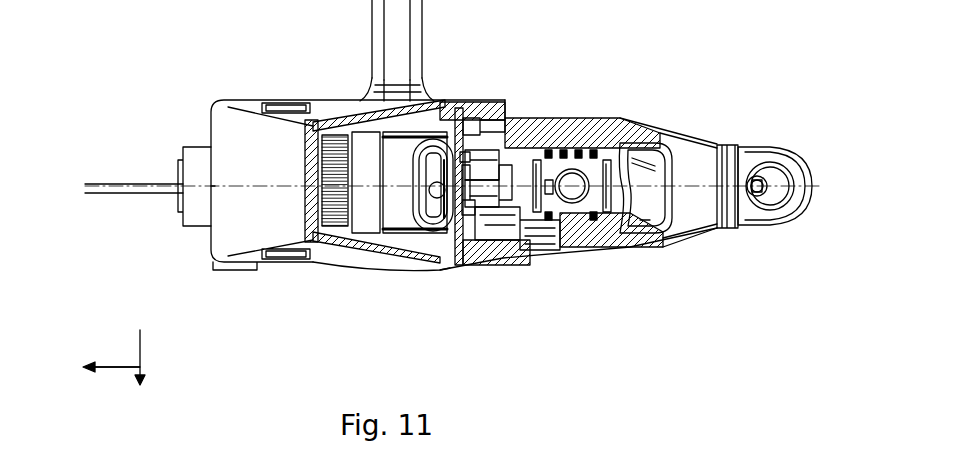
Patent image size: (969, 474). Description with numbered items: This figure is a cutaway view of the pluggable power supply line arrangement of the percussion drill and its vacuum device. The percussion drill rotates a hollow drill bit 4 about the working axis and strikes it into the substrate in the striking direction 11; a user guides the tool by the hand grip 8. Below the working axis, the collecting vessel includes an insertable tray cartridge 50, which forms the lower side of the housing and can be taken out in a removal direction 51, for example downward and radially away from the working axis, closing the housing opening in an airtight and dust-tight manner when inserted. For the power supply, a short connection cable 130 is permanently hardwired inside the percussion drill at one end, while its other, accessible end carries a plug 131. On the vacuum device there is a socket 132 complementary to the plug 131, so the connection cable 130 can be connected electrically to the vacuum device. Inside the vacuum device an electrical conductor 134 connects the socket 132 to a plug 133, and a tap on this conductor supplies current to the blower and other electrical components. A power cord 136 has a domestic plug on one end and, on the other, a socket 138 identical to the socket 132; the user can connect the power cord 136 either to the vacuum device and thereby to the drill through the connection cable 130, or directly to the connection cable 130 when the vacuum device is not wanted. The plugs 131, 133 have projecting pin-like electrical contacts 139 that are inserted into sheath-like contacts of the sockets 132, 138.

The hollow drill bit 4 is at (137, 190).
The tray cartridge 50 is at (233, 137).
The pin-like electrical contacts 139 is at (463, 130).
The electrical conductor 134 is at (471, 158).
The socket 132 is at (488, 170).
The power cord 136 is at (470, 193).
The plug 133 is at (508, 212).
The plug 131 is at (573, 128).
The socket 138 is at (592, 222).
The hand grip 8 is at (753, 222).
The connection cable 130 is at (768, 183).
The removal direction 51 is at (142, 347).
The striking direction 11 is at (127, 370).